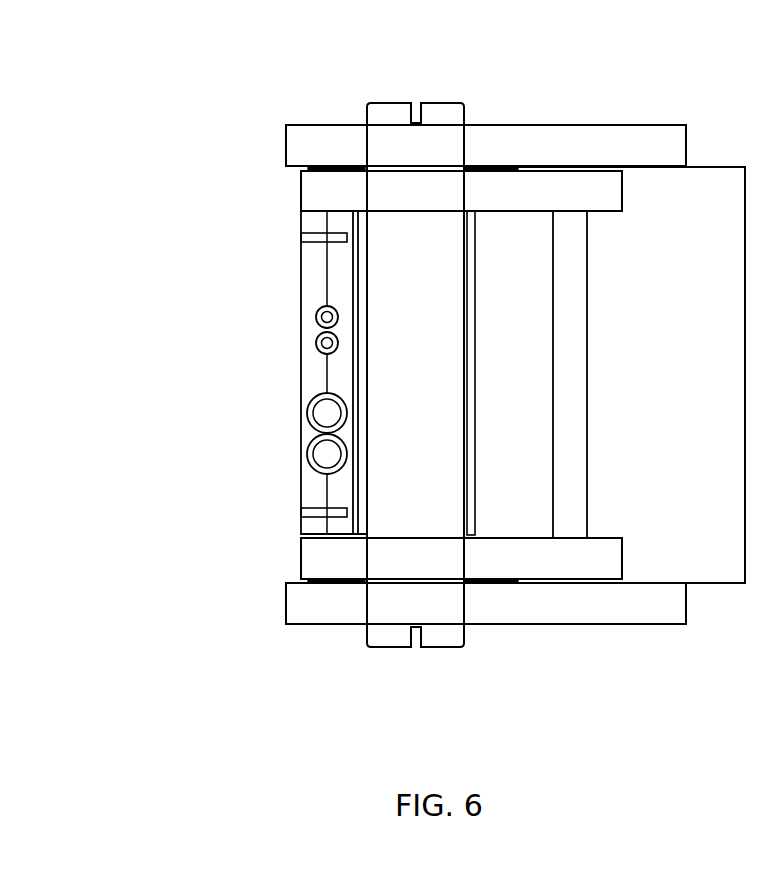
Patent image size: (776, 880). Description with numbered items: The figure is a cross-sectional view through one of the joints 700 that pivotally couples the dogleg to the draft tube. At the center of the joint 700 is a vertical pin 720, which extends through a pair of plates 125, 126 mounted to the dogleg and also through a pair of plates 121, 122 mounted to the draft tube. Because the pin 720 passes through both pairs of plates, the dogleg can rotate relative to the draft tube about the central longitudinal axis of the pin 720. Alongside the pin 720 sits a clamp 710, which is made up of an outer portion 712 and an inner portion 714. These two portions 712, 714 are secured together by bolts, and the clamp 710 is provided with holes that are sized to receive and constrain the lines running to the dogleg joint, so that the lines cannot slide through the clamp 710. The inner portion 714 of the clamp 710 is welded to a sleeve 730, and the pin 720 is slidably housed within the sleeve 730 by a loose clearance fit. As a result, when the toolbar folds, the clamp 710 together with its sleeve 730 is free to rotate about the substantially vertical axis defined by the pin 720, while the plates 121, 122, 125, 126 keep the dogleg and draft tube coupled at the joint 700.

The plate 121 is at (302, 187).
The plate 122 is at (301, 555).
The plate 125 is at (553, 125).
The plate 126 is at (335, 625).
The joint 700 is at (245, 740).
The clamp 710 is at (273, 402).
The outer portion 712 is at (312, 487).
The inner portion 714 is at (338, 278).
The pin 720 is at (397, 102).
The sleeve 730 is at (475, 403).